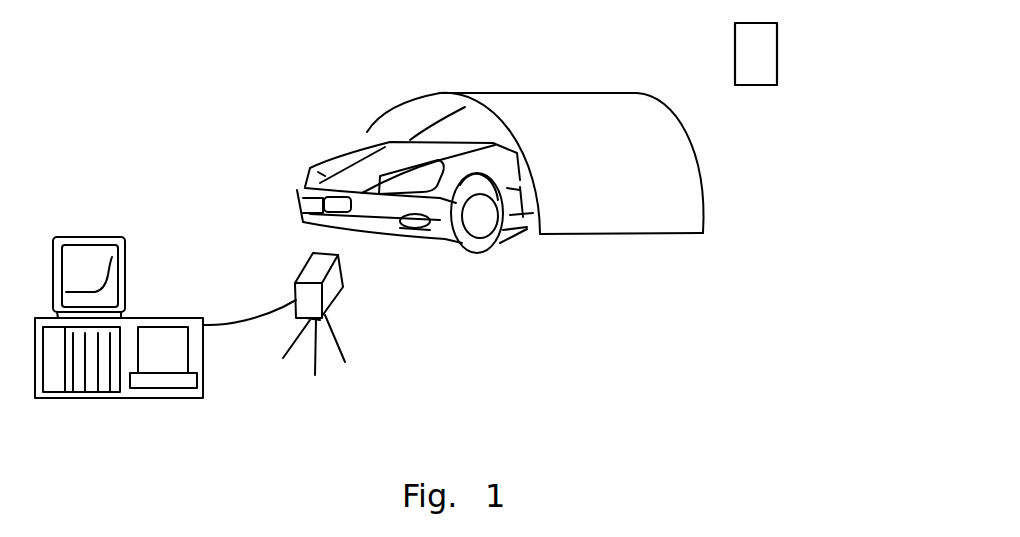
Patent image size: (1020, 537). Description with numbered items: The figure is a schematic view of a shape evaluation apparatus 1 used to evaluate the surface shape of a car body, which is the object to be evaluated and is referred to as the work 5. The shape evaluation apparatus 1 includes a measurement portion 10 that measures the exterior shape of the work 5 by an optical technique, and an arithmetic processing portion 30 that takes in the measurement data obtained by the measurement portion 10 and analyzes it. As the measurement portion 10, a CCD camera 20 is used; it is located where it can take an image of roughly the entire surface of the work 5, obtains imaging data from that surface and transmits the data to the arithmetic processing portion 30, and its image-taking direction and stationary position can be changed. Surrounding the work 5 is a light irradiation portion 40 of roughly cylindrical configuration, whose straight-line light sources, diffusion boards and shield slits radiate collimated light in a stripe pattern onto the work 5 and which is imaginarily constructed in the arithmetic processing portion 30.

The shape evaluation apparatus 1 is at (155, 76).
The work 5 is at (308, 148).
The measurement portion 10 is at (777, 45).
The CCD camera 20 is at (362, 300).
The arithmetic processing portion 30 is at (150, 293).
The light irradiation portion 40 is at (597, 74).